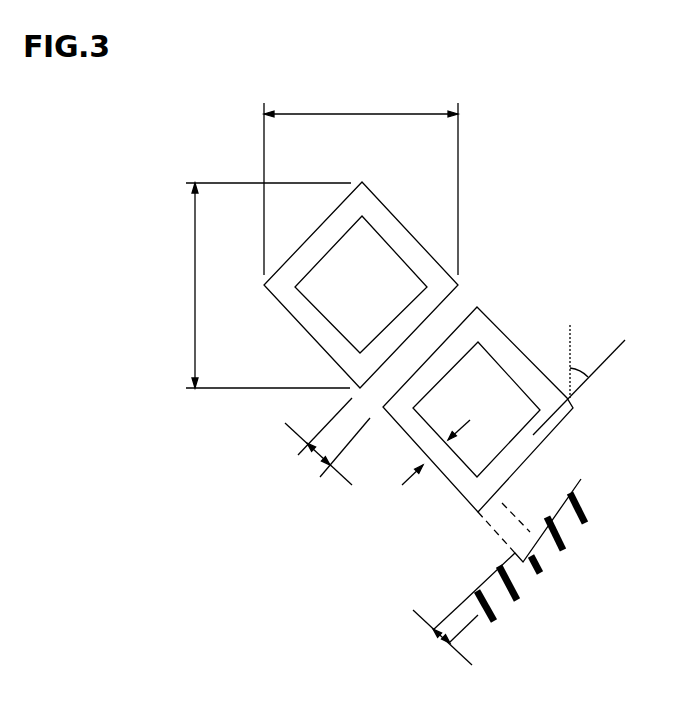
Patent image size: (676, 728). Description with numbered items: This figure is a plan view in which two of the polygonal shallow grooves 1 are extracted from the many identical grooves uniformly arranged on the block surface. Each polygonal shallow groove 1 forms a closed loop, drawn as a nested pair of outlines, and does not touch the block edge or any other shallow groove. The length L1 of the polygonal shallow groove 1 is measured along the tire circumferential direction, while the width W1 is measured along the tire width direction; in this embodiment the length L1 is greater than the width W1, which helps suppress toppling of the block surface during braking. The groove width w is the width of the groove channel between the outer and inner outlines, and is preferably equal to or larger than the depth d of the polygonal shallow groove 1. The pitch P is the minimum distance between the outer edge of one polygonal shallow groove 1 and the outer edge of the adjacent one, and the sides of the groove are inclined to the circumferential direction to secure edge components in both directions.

The polygonal shallow groove 1 is at (415, 233).
The width of the polygonal shallow groove W1 is at (361, 183).
The length of the polygonal shallow groove L1 is at (258, 285).
The pitch P is at (327, 441).
The groove width w is at (428, 452).
The depth of the polygonal shallow groove d is at (445, 634).